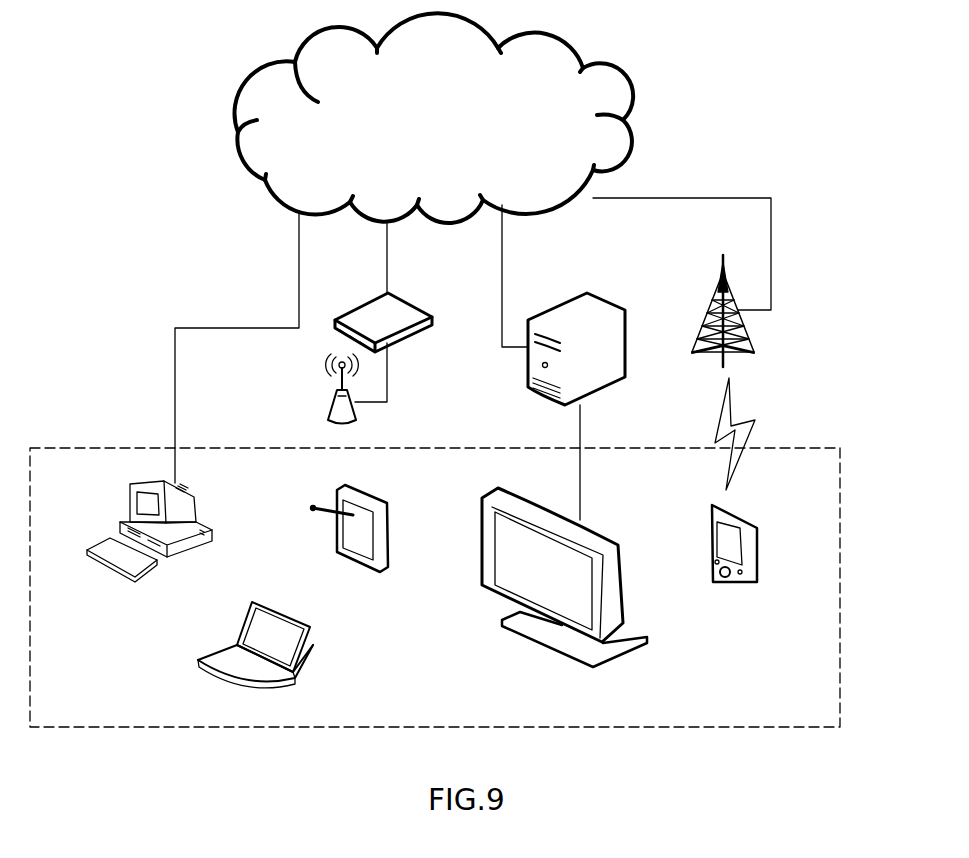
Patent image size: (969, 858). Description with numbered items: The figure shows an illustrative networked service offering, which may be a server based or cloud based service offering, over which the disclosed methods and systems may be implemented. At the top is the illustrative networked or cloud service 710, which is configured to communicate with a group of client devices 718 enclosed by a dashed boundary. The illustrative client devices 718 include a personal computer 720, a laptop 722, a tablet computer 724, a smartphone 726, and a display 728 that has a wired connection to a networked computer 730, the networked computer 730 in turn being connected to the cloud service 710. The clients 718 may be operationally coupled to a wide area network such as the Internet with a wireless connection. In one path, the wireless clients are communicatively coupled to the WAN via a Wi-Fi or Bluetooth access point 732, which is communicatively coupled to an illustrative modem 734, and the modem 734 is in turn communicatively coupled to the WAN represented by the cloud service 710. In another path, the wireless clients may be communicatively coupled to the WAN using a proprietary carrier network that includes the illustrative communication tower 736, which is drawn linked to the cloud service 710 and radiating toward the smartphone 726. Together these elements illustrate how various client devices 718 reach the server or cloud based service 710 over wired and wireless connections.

The networked or cloud service 710 is at (627, 120).
The client devices 718 is at (793, 447).
The personal computer 720 is at (198, 507).
The laptop 722 is at (318, 638).
The tablet computer 724 is at (383, 500).
The smartphone 726 is at (735, 515).
The display 728 is at (603, 532).
The networked computer 730 is at (572, 296).
The Wi-Fi (or Bluetooth) access point 732 is at (328, 417).
The modem 734 is at (402, 297).
The communication tower 736 is at (717, 280).